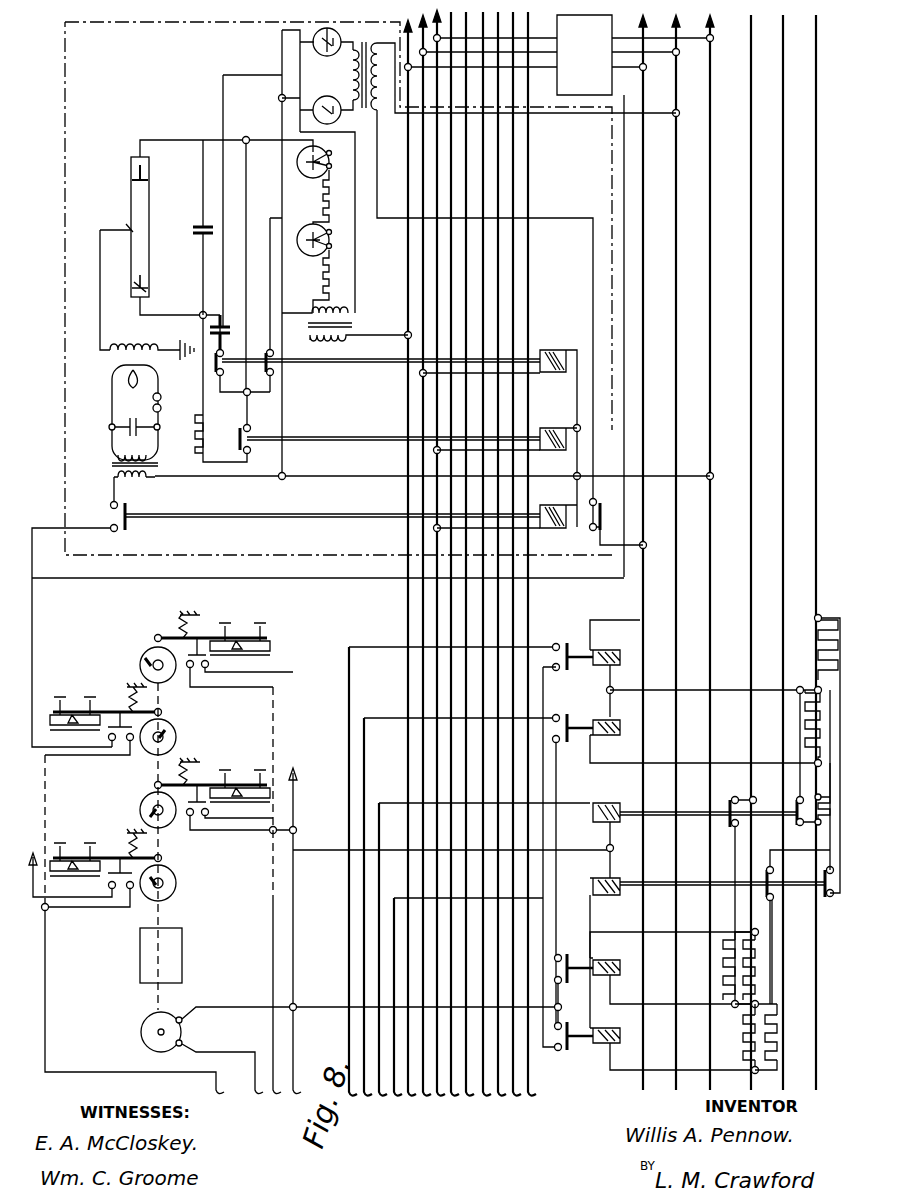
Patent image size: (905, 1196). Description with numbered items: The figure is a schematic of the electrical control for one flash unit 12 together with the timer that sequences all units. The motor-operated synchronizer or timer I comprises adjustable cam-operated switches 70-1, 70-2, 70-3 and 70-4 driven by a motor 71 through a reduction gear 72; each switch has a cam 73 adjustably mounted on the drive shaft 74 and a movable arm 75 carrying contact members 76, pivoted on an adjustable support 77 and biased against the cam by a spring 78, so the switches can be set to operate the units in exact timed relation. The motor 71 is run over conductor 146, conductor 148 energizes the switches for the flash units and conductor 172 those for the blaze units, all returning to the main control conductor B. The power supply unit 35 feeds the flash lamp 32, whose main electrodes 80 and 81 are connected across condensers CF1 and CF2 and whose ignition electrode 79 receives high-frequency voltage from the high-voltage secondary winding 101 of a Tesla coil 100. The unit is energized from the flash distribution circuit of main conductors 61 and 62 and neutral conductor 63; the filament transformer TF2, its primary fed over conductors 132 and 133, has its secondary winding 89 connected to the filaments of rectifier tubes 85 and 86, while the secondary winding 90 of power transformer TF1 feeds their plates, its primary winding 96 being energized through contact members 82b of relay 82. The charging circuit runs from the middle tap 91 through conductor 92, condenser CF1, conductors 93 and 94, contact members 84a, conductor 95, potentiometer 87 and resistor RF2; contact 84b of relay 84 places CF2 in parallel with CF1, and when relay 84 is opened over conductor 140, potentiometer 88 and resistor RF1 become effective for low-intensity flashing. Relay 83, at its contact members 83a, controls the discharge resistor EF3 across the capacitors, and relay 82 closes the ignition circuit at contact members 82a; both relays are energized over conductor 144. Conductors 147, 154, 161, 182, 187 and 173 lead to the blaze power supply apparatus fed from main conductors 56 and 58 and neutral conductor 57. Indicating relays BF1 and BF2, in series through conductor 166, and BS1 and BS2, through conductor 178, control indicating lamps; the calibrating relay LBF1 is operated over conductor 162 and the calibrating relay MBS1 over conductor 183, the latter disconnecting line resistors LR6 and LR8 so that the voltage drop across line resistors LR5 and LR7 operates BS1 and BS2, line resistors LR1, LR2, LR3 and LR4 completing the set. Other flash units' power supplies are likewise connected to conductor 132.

The flash unit 12 is at (338, 288).
The power supply unit 35 is at (473, 296).
The flash lamp 32 is at (131, 200).
The ignition electrode 79 is at (110, 274).
The main electrode 80 is at (131, 290).
The main electrode 81 is at (131, 172).
The conductor 92 is at (223, 85).
The conductor 93 is at (268, 140).
The conductor 94 is at (246, 230).
The conductor 95 is at (270, 232).
The rectifier tube 85 is at (312, 110).
The rectifier tube 86 is at (312, 40).
The secondary winding 90 is at (357, 104).
The middle tap 91 is at (352, 60).
The primary winding 96 is at (378, 108).
The potentiometer 88 is at (306, 172).
The potentiometer 87 is at (306, 250).
The secondary winding 89 is at (320, 296).
The high-voltage secondary winding 101 is at (132, 345).
The Tesla coil 100 is at (123, 421).
The control relay 84 is at (330, 364).
The contact members 84a is at (262, 352).
The contact 84b is at (217, 375).
The control relay 83 is at (330, 444).
The relay contact 83a is at (237, 390).
The control relay 82 is at (330, 520).
The contact members 82a is at (112, 508).
The contact members 82b is at (590, 530).
The conductor 133 is at (372, 478).
The condenser CF1 is at (198, 240).
The condenser CF2 is at (224, 326).
The resistor EF3 is at (188, 428).
The resistor RF1 is at (334, 197).
The resistor RF2 is at (345, 272).
The power transformer TF1 is at (514, 272).
The filament transformer TF2 is at (352, 310).
The conductor 147 is at (452, 576).
The conductor 161 is at (467, 576).
The conductor 182 is at (483, 576).
The conductor 187 is at (498, 576).
The conductor 154 is at (513, 576).
The conductor 173 is at (528, 576).
The conductor 178 is at (449, 894).
The conductor 166 is at (456, 929).
The conductor 162 is at (481, 972).
The conductor 183 is at (465, 1019).
The conductor 132 is at (414, 580).
The conductor 140 is at (478, 578).
The conductor 144 is at (485, 575).
The main conductor 61 is at (636, 552).
The main conductor 62 is at (703, 552).
The neutral conductor 63 is at (669, 552).
The main conductor 56 is at (745, 552).
The neutral conductor 57 is at (775, 552).
The main conductor 58 is at (808, 552).
The cam-operated switch 70-1 is at (102, 856).
The cam-operated switch 70-2 is at (216, 780).
The cam-operated switch 70-3 is at (110, 705).
The cam-operated switch 70-4 is at (210, 641).
The motor 71 is at (142, 1035).
The reduction gear 72 is at (140, 960).
The cam 73 is at (178, 885).
The drive shaft 74 is at (166, 858).
The movable arm 75 is at (94, 855).
The contact members 76 is at (156, 900).
The adjustable support 77 is at (66, 852).
The spring 78 is at (128, 852).
The conductor 148 is at (217, 1121).
The conductor 146 is at (256, 1120).
The conductor 172 is at (276, 1018).
The main control conductor B is at (447, 948).
The timer unit I is at (76, 971).
The indicating relay BS1 is at (671, 830).
The indicating relay BF1 is at (686, 856).
The calibrating relay LBF1 is at (693, 847).
The calibrating relay MBS1 is at (701, 919).
The indicating relay BF2 is at (655, 975).
The indicating relay BS2 is at (655, 1001).
The line resistor LR1 is at (815, 780).
The line resistor LR2 is at (793, 727).
The line resistor LR3 is at (753, 954).
The line resistor LR4 is at (733, 953).
The line resistor LR5 is at (815, 754).
The line resistor LR6 is at (840, 618).
The line resistor LR7 is at (744, 1039).
The line resistor LR8 is at (782, 1030).